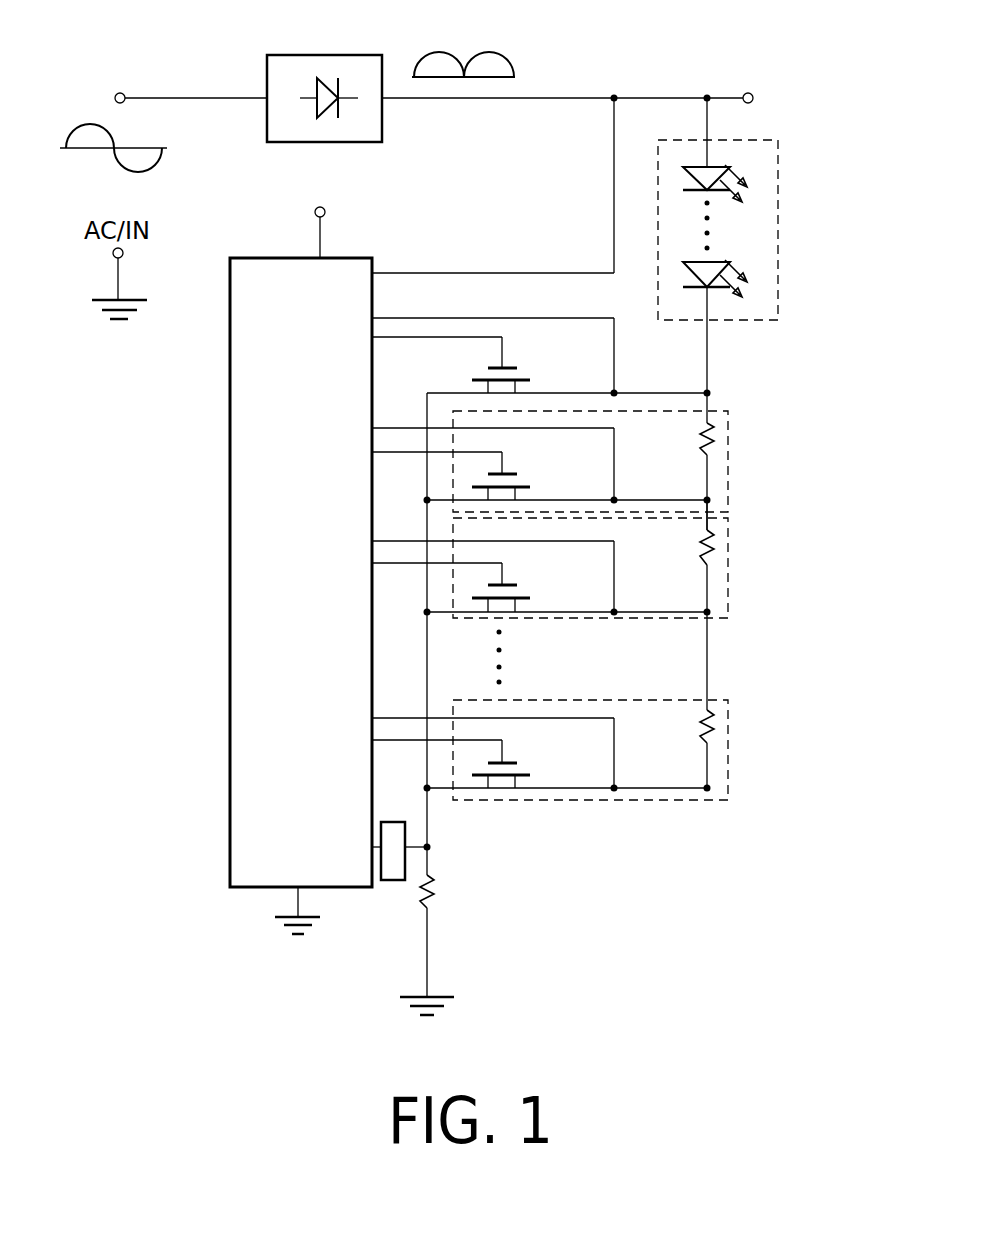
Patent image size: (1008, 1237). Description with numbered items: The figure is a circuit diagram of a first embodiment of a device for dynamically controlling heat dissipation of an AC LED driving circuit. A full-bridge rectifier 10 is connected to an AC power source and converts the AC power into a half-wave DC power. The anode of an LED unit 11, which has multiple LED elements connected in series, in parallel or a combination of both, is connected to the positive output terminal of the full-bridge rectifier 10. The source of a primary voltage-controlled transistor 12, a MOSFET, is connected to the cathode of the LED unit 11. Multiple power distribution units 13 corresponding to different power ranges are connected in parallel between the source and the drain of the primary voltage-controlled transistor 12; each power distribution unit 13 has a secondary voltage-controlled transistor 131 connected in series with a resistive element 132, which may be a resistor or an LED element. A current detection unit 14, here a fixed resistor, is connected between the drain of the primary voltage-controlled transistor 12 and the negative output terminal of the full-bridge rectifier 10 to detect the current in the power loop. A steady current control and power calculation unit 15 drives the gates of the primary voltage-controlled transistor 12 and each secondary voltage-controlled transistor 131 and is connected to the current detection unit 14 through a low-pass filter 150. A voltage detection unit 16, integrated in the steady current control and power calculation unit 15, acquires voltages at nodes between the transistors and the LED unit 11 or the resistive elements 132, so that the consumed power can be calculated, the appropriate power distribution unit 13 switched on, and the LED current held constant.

The full-bridge rectifier 10 is at (307, 55).
The LED unit 11 is at (773, 137).
The primary voltage-controlled transistor 12 is at (513, 368).
The power distribution unit 13 is at (605, 589).
The secondary voltage-controlled transistor 131 is at (513, 474).
The resistive element 132 is at (715, 442).
The current detection unit 14 is at (433, 877).
The steady current control and power calculation unit 15 is at (356, 556).
The voltage detection unit 16 is at (353, 258).
The low-pass filter 150 is at (393, 880).